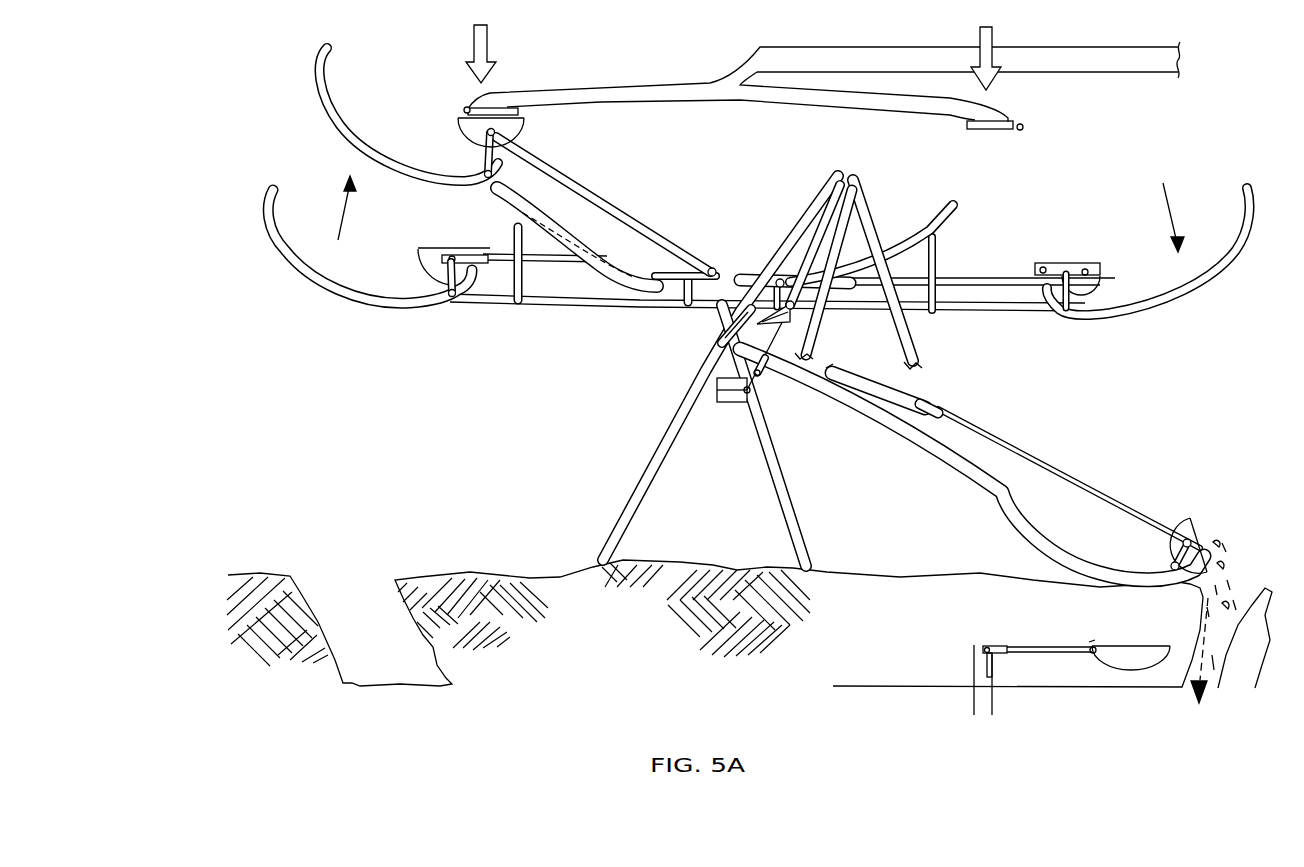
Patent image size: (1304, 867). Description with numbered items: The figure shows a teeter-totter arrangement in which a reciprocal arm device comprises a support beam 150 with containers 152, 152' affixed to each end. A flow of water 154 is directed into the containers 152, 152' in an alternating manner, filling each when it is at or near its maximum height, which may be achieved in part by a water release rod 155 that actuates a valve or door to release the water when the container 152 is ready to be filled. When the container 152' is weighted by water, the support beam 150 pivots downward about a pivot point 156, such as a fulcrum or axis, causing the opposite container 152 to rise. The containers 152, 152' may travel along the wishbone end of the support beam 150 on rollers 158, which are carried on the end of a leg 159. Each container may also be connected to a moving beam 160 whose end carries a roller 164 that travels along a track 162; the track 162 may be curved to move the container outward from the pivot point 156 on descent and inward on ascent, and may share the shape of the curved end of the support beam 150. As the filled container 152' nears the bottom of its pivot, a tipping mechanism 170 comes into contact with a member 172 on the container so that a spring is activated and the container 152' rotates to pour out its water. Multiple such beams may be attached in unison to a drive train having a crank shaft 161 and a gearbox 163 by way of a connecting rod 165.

The support beam 150 is at (707, 322).
The container 152 is at (491, 200).
The container 152' is at (1121, 395).
The flow of water 154 is at (821, 65).
The water release rod 155 is at (465, 108).
The pivot point 156 is at (708, 348).
The rollers 158 is at (484, 162).
The leg 159 is at (482, 150).
The moving beam 160 is at (614, 210).
The crank shaft 161 is at (767, 374).
The track 162 is at (664, 306).
The gearbox 163 is at (730, 392).
The roller 164 is at (714, 267).
The connecting rod 165 is at (812, 348).
The tipping mechanism 170 is at (995, 647).
The member 172 is at (1097, 652).